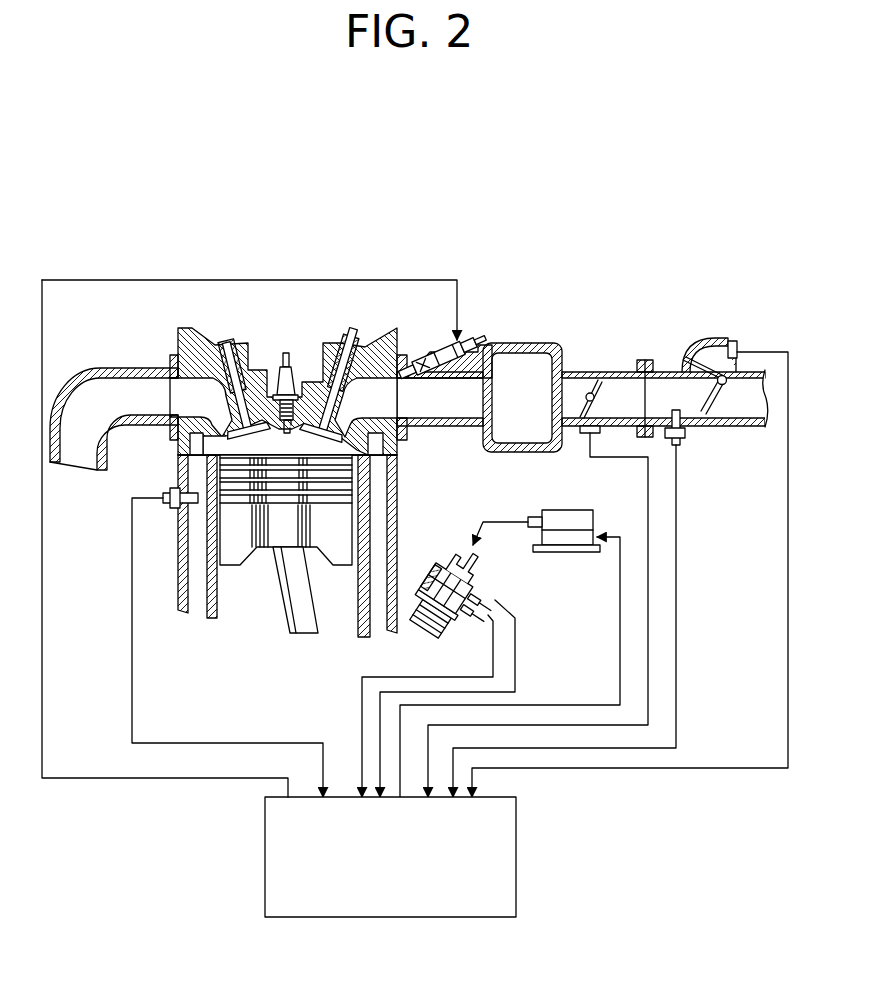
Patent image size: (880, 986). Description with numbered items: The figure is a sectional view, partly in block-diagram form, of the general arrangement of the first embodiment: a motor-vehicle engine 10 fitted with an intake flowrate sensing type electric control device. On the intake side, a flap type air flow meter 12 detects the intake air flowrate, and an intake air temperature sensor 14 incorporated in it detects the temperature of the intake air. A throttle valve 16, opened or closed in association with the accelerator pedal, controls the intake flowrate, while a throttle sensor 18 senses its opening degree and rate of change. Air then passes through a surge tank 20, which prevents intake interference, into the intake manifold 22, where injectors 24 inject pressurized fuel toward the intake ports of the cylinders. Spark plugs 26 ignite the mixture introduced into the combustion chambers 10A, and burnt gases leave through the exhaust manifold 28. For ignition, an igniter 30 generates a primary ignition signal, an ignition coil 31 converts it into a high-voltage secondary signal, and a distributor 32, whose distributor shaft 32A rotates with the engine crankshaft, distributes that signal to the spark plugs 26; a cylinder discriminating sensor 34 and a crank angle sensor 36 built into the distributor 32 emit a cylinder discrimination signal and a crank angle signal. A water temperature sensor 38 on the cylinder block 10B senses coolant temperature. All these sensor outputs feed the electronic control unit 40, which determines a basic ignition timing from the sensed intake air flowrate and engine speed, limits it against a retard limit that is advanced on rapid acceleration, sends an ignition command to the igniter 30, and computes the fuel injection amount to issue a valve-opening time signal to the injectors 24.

The engine 10 is at (289, 488).
The combustion chambers 10A is at (285, 438).
The cylinder block 10B is at (178, 592).
The air flow meter 12 is at (718, 395).
The intake air temperature sensor 14 is at (682, 442).
The throttle valve 16 is at (588, 392).
The throttle sensor 18 is at (588, 437).
The surge tank 20 is at (515, 343).
The intake manifold 22 is at (443, 428).
The injectors 24 is at (437, 350).
The spark plugs 26 is at (290, 353).
The exhaust manifold 28 is at (104, 368).
The igniter 30 is at (569, 553).
The ignition coil 31 is at (557, 510).
The distributor 32 is at (447, 651).
The distributor shaft 32A is at (430, 572).
The cylinder discriminating sensor 34 is at (484, 597).
The crank angle sensor 36 is at (466, 618).
The water temperature sensor 38 is at (165, 494).
The electronic control unit 40 is at (516, 858).